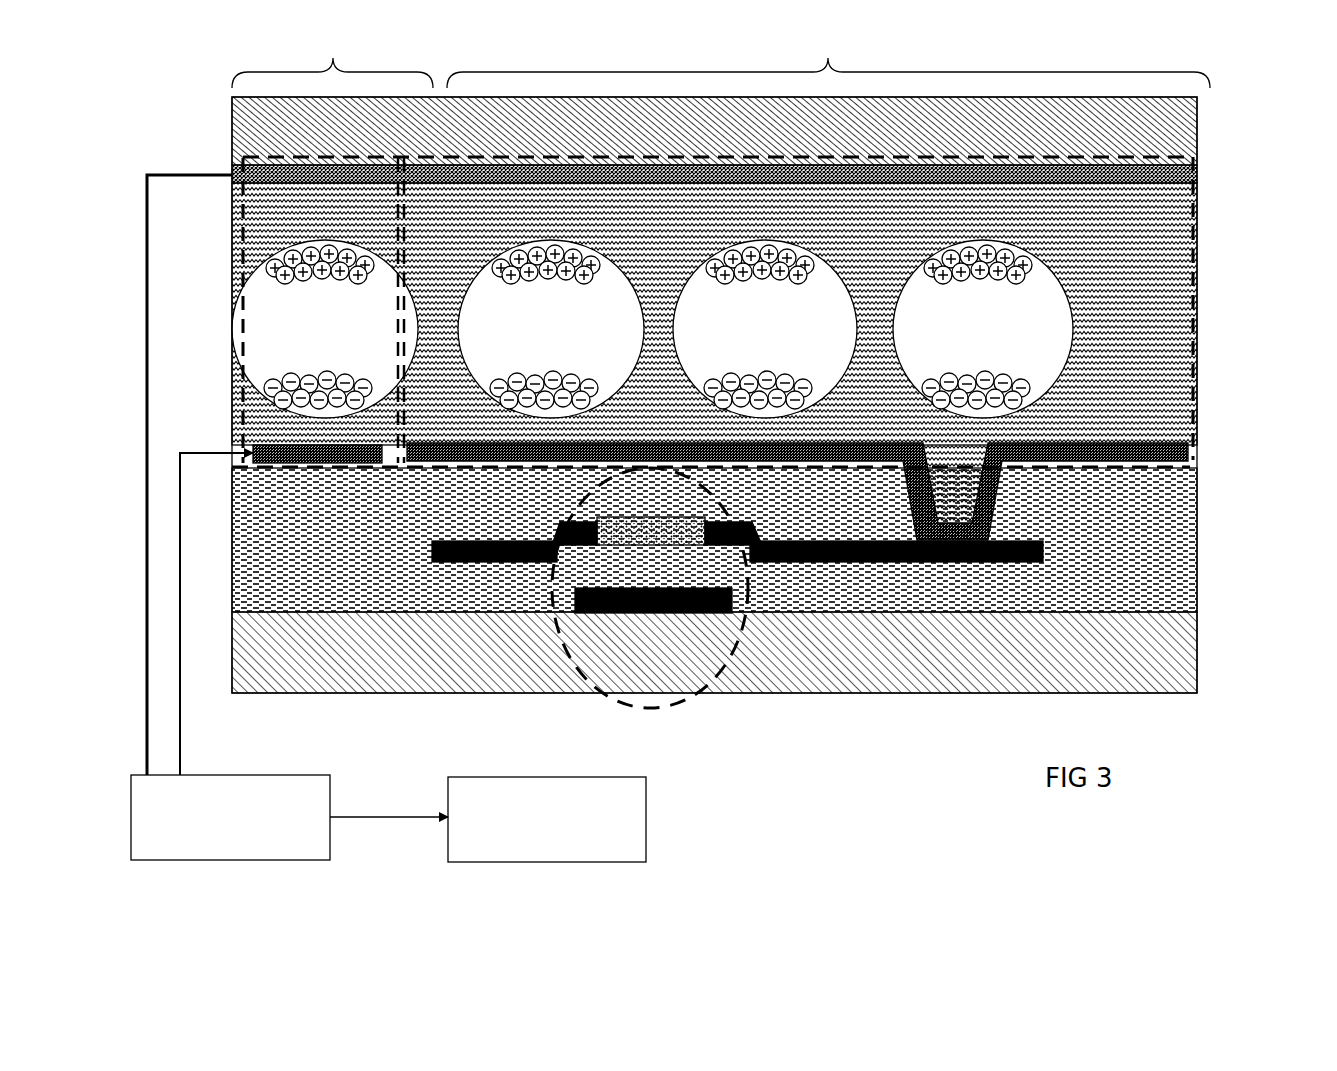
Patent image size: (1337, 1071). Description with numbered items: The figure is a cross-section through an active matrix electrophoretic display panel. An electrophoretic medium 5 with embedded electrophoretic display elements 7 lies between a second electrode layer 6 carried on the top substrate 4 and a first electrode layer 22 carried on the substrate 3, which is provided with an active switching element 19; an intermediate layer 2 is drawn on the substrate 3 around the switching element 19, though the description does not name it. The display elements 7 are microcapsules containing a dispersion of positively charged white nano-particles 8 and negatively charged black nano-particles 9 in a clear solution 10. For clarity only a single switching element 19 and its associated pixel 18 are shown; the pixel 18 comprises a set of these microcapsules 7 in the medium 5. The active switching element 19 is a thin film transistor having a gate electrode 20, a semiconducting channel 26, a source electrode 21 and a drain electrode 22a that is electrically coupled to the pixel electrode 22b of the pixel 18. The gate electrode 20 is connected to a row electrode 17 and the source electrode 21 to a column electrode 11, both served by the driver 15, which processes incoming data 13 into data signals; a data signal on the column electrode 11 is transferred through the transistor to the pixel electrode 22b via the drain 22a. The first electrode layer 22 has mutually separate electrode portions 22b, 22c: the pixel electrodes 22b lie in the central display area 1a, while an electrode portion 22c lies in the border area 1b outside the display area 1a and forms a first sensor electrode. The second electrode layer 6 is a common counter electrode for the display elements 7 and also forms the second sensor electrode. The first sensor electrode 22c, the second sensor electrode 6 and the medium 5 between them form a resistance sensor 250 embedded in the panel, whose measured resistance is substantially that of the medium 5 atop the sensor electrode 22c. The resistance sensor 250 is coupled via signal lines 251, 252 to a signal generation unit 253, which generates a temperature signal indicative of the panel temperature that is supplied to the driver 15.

The central display area 1a is at (828, 61).
The border area 1b is at (332, 61).
The insulating layer 2 is at (1140, 584).
The substrate 3 is at (1140, 633).
The top substrate 4 is at (1153, 123).
The electrophoretic medium 5 is at (1157, 413).
The second electrode layer 6 is at (1197, 170).
The electrophoretic display elements 7 is at (1020, 242).
The positively charged white nano-particles 8 is at (1032, 270).
The negatively charged black nano-particles 9 is at (769, 366).
The clear solution 10 is at (1037, 303).
The column electrodes 11 is at (510, 563).
The incoming data 13 is at (713, 820).
The driver 15 is at (488, 819).
The row electrodes 17 is at (622, 614).
The pixel 18 is at (1193, 378).
The active switching element 19 is at (653, 608).
The gate electrode 20 is at (663, 613).
The source electrode 21 is at (432, 548).
The first electrode layer 22 is at (1288, 437).
The drain electrode 22a is at (1045, 553).
The pixel electrode 22b is at (1195, 455).
The first sensor electrode 22c is at (246, 447).
The semiconducting channel 26 is at (677, 540).
The resistance sensor 250 is at (238, 197).
The signal line 251 is at (147, 727).
The signal line 252 is at (180, 757).
The signal generation unit 253 is at (230, 817).